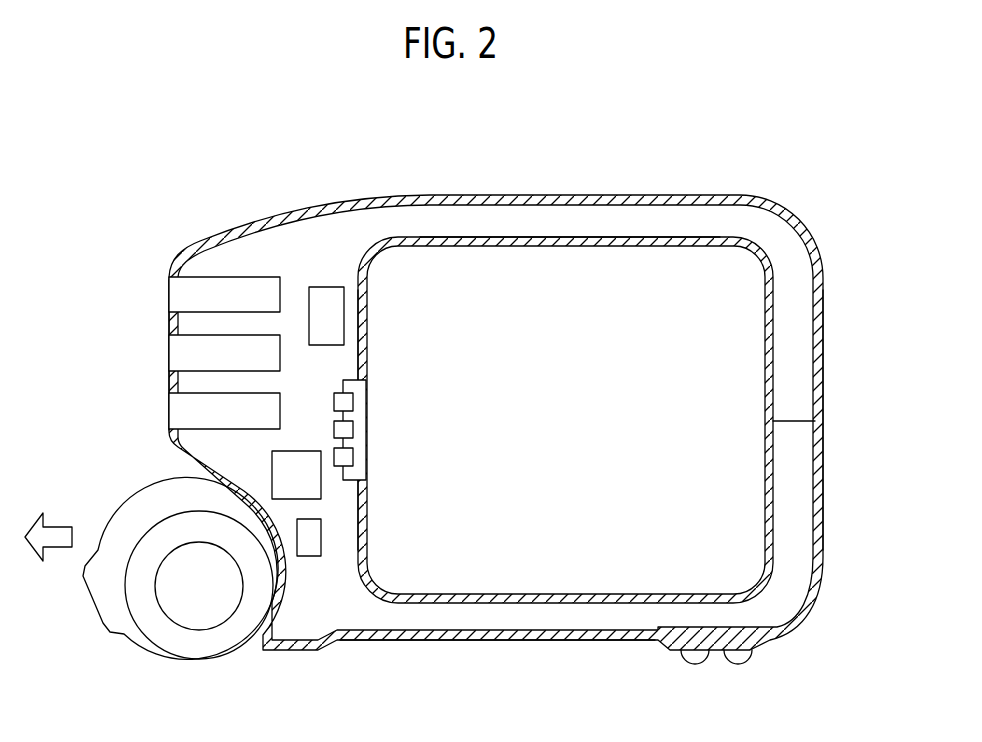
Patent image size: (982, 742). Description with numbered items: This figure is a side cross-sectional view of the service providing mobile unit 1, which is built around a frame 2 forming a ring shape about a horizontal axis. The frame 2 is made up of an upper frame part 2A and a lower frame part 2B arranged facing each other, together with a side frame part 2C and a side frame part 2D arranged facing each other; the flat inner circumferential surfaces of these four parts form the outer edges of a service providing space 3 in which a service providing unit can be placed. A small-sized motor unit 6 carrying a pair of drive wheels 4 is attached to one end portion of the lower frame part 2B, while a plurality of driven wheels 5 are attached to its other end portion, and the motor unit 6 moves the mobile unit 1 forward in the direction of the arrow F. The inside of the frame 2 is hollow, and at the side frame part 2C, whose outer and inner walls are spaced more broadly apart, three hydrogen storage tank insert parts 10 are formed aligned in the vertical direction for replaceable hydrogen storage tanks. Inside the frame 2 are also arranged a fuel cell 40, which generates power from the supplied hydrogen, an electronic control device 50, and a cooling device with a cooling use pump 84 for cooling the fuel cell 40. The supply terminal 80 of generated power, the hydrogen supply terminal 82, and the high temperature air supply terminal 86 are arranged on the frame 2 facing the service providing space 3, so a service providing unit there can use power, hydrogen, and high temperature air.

The service providing mobile unit 1 is at (747, 180).
The frame 2 is at (642, 183).
The upper frame part 2A is at (538, 237).
The lower frame part 2B is at (580, 641).
The side frame part 2C is at (170, 384).
The side frame part 2D is at (824, 418).
The service providing space 3 is at (740, 283).
The drive wheels 4 is at (170, 637).
The driven wheels 5 is at (697, 662).
The small-sized motor unit 6 is at (130, 520).
The hydrogen storage tank insert parts 10 is at (243, 411).
The fuel cell 40 is at (272, 472).
The electronic control device 50 is at (323, 287).
The supply terminal of generated power 80 is at (354, 402).
The hydrogen supply terminal 82 is at (354, 457).
The cooling use pump 84 is at (308, 557).
The high temperature air supply terminal 86 is at (354, 430).
The arrow F is at (55, 537).